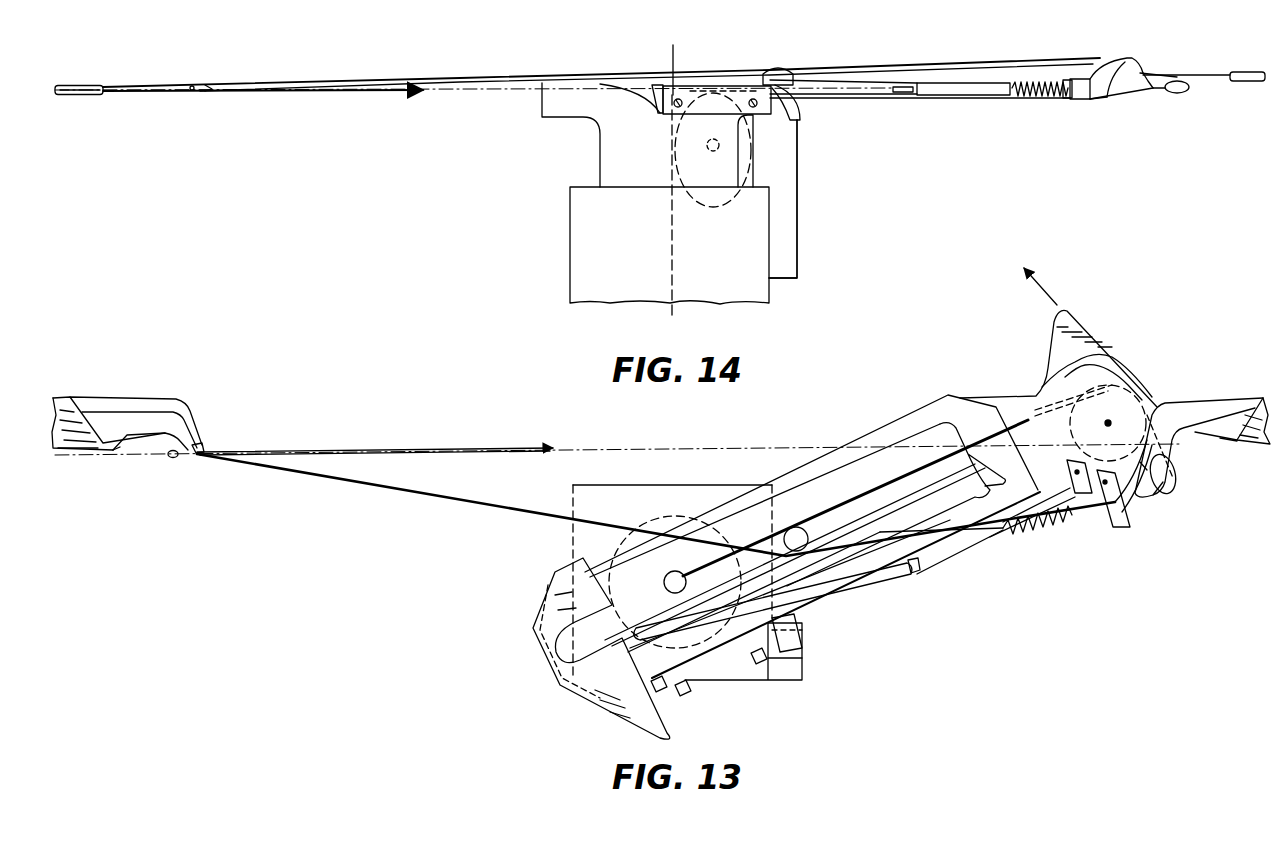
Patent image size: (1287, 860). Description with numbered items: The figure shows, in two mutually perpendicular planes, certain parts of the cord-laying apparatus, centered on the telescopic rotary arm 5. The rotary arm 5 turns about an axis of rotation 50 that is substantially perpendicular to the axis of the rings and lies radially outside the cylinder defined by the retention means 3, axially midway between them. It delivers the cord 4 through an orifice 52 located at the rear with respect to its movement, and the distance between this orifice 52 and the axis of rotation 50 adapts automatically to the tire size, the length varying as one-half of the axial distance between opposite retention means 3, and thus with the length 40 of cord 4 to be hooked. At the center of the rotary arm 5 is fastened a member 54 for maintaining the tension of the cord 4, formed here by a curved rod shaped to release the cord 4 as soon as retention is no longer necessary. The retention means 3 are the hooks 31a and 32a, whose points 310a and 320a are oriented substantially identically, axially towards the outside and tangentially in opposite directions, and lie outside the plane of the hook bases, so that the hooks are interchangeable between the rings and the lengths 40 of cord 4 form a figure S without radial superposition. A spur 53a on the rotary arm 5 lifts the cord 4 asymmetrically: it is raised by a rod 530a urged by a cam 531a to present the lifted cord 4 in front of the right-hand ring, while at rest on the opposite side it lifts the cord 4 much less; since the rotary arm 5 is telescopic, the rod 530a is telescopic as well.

In FIG. 14, the retention means 3 is at (212, 80).
In FIG. 13, the retention means 3 is at (101, 395).
In FIG. 14, the cord 4 is at (856, 68).
In FIG. 14, the rotary arm 5 is at (916, 78).
In FIG. 13, the rotary arm 5 is at (920, 418).
In FIG. 14, the length of cord 40 is at (290, 96).
In FIG. 13, the length of cord 40 is at (407, 446).
In FIG. 14, the axis of rotation 50 is at (680, 66).
In FIG. 13, the axis of rotation 50 is at (664, 584).
In FIG. 14, the orifice 52 is at (1172, 82).
In FIG. 13, the orifice 52 is at (1184, 484).
In FIG. 14, the member for maintaining the tension of the cord 54 is at (775, 68).
In FIG. 13, the member for maintaining the tension of the cord 54 is at (797, 527).
In FIG. 13, the hook 31a is at (125, 447).
In FIG. 13, the hook 32a is at (188, 408).
In FIG. 14, the spur 53a is at (1094, 100).
In FIG. 13, the spur 53a is at (1120, 524).
In FIG. 14, the point of the hook 310a is at (190, 87).
In FIG. 13, the point of the hook 310a is at (171, 458).
In FIG. 14, the point of the hook 320a is at (210, 87).
In FIG. 13, the point of the hook 320a is at (205, 448).
In FIG. 14, the rod 530a is at (962, 84).
In FIG. 13, the rod 530a is at (958, 556).
In FIG. 14, the cam 531a is at (790, 180).
In FIG. 13, the cam 531a is at (806, 656).